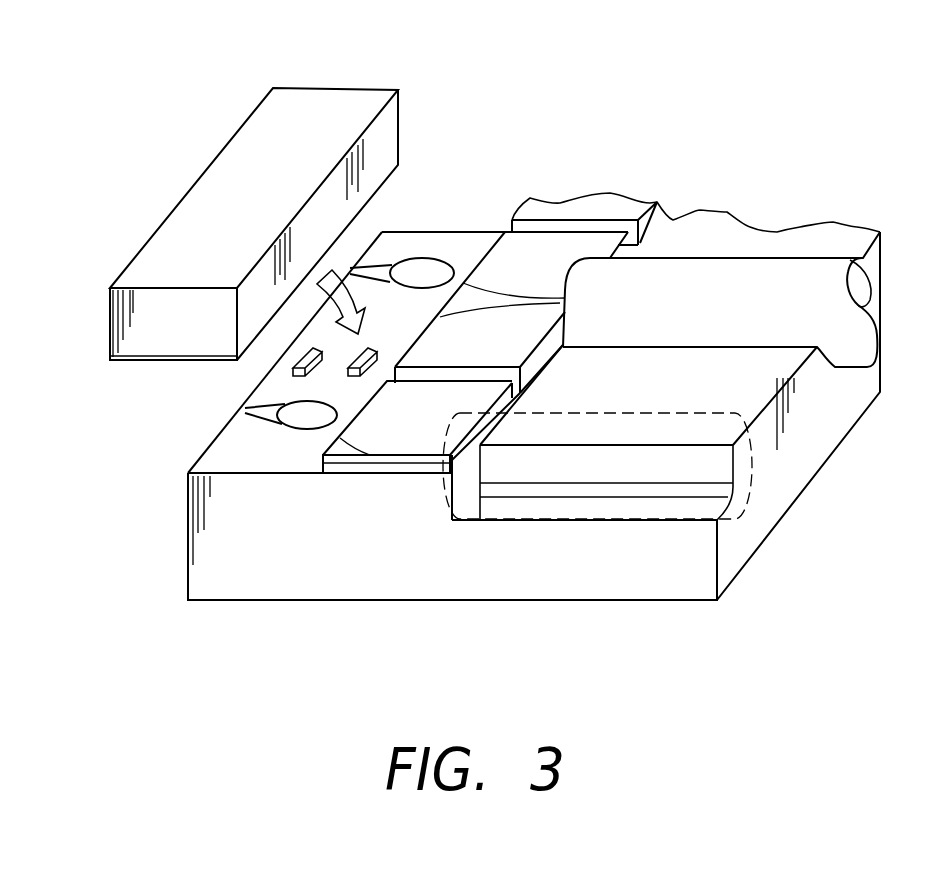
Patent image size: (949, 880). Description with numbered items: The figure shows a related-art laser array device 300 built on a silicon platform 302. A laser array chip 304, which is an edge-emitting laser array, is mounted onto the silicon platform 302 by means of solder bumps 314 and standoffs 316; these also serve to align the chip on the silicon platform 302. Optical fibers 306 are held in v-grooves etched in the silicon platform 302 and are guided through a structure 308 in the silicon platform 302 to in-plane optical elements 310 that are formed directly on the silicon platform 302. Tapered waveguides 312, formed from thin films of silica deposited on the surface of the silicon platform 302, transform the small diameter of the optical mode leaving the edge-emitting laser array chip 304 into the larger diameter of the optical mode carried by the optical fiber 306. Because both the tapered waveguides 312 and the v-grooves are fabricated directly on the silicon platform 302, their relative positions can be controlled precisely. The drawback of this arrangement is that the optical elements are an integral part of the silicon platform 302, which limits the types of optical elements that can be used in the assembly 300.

The device 300 is at (720, 120).
The silicon platform 302 is at (818, 432).
The laser array chip 304 is at (315, 100).
The optical fibers 306 is at (790, 273).
The structure 308 is at (602, 418).
The in-plane optical elements 310 is at (387, 455).
The tapered waveguides 312 is at (480, 306).
The solder bumps 314 is at (421, 263).
The standoffs 316 is at (270, 374).